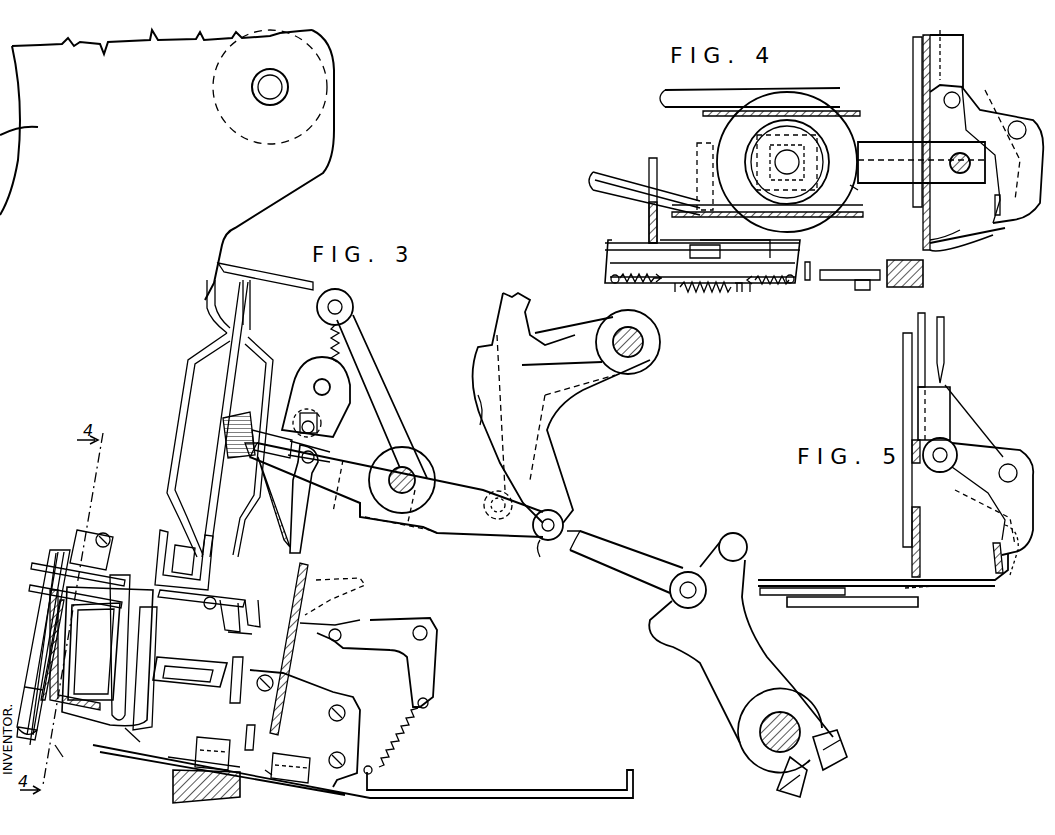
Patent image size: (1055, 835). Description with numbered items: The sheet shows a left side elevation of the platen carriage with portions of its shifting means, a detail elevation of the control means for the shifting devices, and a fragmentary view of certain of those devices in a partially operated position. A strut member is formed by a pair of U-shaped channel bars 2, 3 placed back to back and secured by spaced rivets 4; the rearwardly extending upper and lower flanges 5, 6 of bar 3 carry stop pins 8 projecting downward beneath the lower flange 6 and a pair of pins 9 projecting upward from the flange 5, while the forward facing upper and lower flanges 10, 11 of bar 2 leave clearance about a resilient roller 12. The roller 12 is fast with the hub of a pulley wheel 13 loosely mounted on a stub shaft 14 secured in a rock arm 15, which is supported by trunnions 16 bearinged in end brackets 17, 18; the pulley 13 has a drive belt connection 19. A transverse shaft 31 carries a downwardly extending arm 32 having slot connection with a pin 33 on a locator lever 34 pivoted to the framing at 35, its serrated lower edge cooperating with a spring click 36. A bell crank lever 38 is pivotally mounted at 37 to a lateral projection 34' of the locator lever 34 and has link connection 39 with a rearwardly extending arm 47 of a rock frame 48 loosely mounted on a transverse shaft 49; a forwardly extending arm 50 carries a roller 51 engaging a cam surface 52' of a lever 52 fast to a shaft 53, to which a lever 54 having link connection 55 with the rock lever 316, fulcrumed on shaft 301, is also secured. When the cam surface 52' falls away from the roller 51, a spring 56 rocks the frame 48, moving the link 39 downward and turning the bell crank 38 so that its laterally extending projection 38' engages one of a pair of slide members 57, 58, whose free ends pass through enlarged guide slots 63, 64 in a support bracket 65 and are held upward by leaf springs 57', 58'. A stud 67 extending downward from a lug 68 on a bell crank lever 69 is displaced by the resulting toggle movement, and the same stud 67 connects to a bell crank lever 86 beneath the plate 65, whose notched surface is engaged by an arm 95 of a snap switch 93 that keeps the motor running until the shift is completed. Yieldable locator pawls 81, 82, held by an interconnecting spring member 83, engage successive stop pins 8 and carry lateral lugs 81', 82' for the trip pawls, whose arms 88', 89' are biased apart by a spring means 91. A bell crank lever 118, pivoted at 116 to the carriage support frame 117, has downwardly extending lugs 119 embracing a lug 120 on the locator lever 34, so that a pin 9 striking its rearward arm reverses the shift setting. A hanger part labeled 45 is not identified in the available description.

In FIG. 3, the U-shaped channel bar 2 is at (48, 630).
In FIG. 3, the U-shaped channel bar 3 is at (52, 640).
In FIG. 3, the spaced rivets 4 is at (55, 652).
In FIG. 3, the upper flange 5 is at (45, 585).
In FIG. 3, the lower flange 6 is at (55, 750).
In FIG. 3, the stop pins 8 is at (27, 739).
In FIG. 4, the stop pins 8 is at (697, 170).
In FIG. 3, the pins 9 is at (50, 553).
In FIG. 3, the upper flange 10 is at (112, 597).
In FIG. 4, the upper flange 10 is at (848, 110).
In FIG. 3, the lower flange 11 is at (80, 698).
In FIG. 4, the lower flange 11 is at (850, 214).
In FIG. 3, the roller 12 is at (105, 648).
In FIG. 4, the roller 12 is at (735, 135).
In FIG. 3, the pulley wheel 13 is at (145, 590).
In FIG. 4, the pulley wheel 13 is at (840, 135).
In FIG. 4, the stub shaft 14 is at (787, 160).
In FIG. 3, the rock arm 15 is at (215, 690).
In FIG. 4, the rock arm 15 is at (893, 171).
In FIG. 3, the trunnions 16 is at (165, 690).
In FIG. 4, the trunnions 16 is at (960, 173).
In FIG. 3, the end bracket 17 is at (245, 690).
In FIG. 3, the end bracket 18 is at (125, 740).
In FIG. 3, the drive belt connection 19 is at (140, 630).
In FIG. 4, the drive belt connection 19 is at (605, 157).
In FIG. 3, the transverse shaft 31 is at (322, 379).
In FIG. 3, the downwardly extending arm 32 is at (300, 400).
In FIG. 3, the pin 33 is at (318, 427).
In FIG. 3, the locator lever 34 is at (394, 499).
In FIG. 5, the locator lever 34 is at (941, 440).
In FIG. 3, the lateral projection 34' is at (335, 585).
In FIG. 4, the lateral projection 34' is at (966, 69).
In FIG. 5, the lateral projection 34' is at (960, 421).
In FIG. 3, the pivot 35 is at (262, 481).
In FIG. 3, the spring click 36 is at (397, 615).
In FIG. 3, the pivot 37 is at (288, 660).
In FIG. 4, the pivot 37 is at (1020, 125).
In FIG. 5, the pivot 37 is at (1010, 463).
In FIG. 3, the bell crank lever 38 is at (292, 649).
In FIG. 4, the bell crank lever 38 is at (1002, 130).
In FIG. 5, the bell crank lever 38 is at (978, 478).
In FIG. 3, the laterally extending projection 38' is at (231, 733).
In FIG. 4, the laterally extending projection 38' is at (979, 203).
In FIG. 5, the laterally extending projection 38' is at (978, 550).
In FIG. 3, the link connection 39 is at (288, 545).
In FIG. 5, the link connection 39 is at (945, 390).
In FIG. 3, the hanger 45 is at (245, 314).
In FIG. 3, the rearwardly extending arm 47 is at (343, 484).
In FIG. 3, the rock frame 48 is at (400, 533).
In FIG. 3, the transverse shaft 49 is at (415, 480).
In FIG. 3, the forwardly extending arm 50 is at (460, 530).
In FIG. 3, the roller 51 is at (545, 548).
In FIG. 3, the lever 52 is at (561, 408).
In FIG. 3, the cam surface 52' is at (462, 409).
In FIG. 3, the shaft 53 is at (642, 352).
In FIG. 3, the lever 54 is at (588, 330).
In FIG. 3, the link connection 55 is at (510, 530).
In FIG. 3, the spring 56 is at (360, 336).
In FIG. 3, the slide member 57 is at (185, 753).
In FIG. 4, the slide member 57 is at (971, 245).
In FIG. 5, the slide member 57 is at (883, 583).
In FIG. 4, the leaf spring 57' is at (951, 251).
In FIG. 5, the leaf spring 57' is at (926, 606).
In FIG. 3, the slide member 58 is at (297, 756).
In FIG. 3, the leaf spring 58' is at (259, 761).
In FIG. 3, the guide slot 63 is at (190, 760).
In FIG. 3, the guide slot 64 is at (305, 790).
In FIG. 3, the support bracket 65 is at (357, 710).
In FIG. 4, the support bracket 65 is at (930, 225).
In FIG. 5, the support bracket 65 is at (895, 608).
In FIG. 4, the stud 67 is at (808, 283).
In FIG. 4, the lug 68 is at (850, 225).
In FIG. 4, the bell crank lever 69 is at (865, 186).
In FIG. 4, the yieldable pawl 81 is at (628, 200).
In FIG. 4, the lateral lug 81' is at (683, 261).
In FIG. 4, the yieldable pawl 82 is at (716, 240).
In FIG. 4, the lateral lug 82' is at (782, 303).
In FIG. 4, the spring member 83 is at (770, 297).
In FIG. 4, the bell crank lever 86 is at (833, 290).
In FIG. 4, the arm 88' is at (737, 302).
In FIG. 4, the arm 89' is at (641, 292).
In FIG. 4, the spring means 91 is at (706, 292).
In FIG. 3, the snap switch 93 is at (172, 785).
In FIG. 4, the snap switch 93 is at (925, 280).
In FIG. 4, the arm 95 is at (862, 285).
In FIG. 3, the pivot 116 is at (210, 580).
In FIG. 3, the carriage support frame 117 is at (210, 557).
In FIG. 3, the bell crank lever 118 is at (190, 597).
In FIG. 3, the lugs 119 is at (250, 600).
In FIG. 3, the lug 120 is at (240, 632).
In FIG. 3, the shaft 301 is at (765, 735).
In FIG. 3, the lever 316 is at (790, 680).